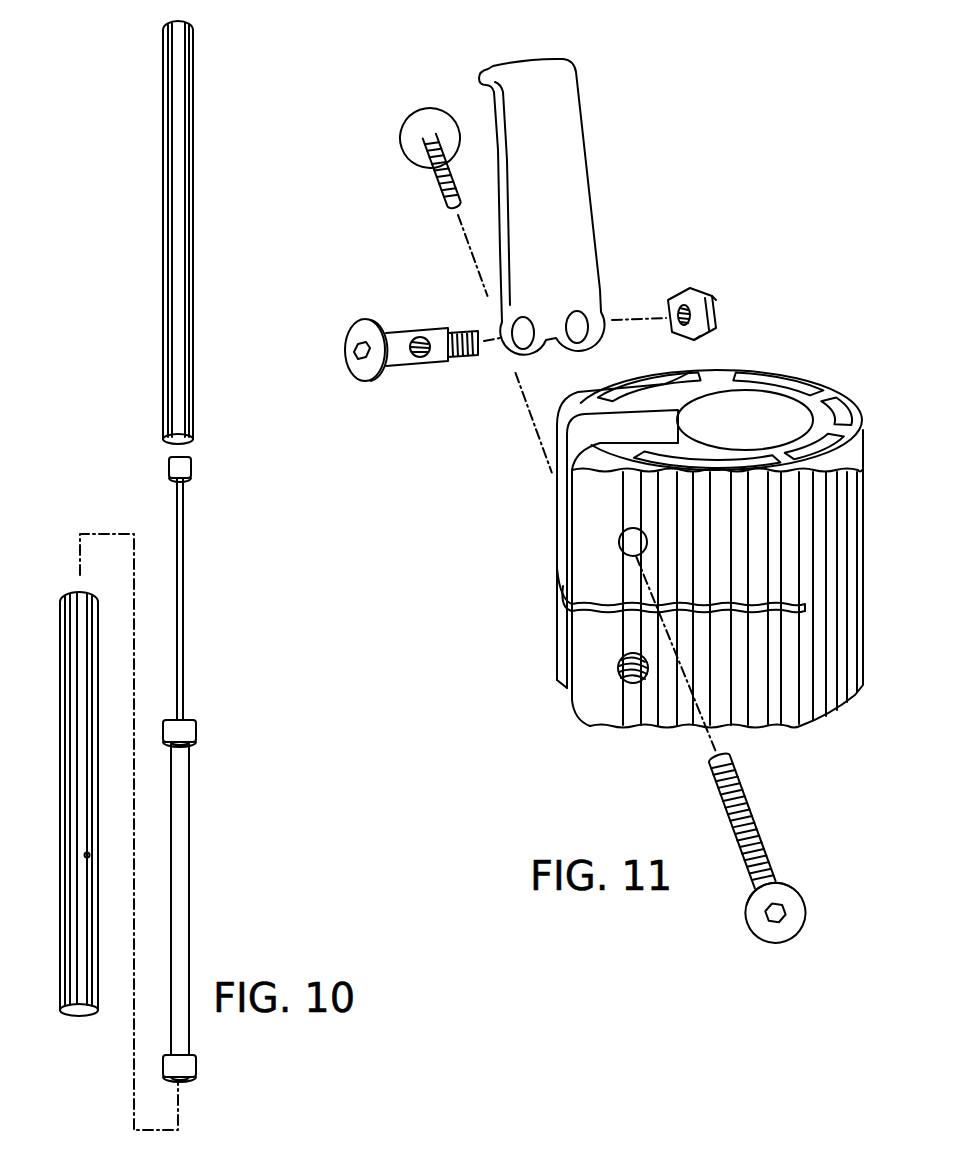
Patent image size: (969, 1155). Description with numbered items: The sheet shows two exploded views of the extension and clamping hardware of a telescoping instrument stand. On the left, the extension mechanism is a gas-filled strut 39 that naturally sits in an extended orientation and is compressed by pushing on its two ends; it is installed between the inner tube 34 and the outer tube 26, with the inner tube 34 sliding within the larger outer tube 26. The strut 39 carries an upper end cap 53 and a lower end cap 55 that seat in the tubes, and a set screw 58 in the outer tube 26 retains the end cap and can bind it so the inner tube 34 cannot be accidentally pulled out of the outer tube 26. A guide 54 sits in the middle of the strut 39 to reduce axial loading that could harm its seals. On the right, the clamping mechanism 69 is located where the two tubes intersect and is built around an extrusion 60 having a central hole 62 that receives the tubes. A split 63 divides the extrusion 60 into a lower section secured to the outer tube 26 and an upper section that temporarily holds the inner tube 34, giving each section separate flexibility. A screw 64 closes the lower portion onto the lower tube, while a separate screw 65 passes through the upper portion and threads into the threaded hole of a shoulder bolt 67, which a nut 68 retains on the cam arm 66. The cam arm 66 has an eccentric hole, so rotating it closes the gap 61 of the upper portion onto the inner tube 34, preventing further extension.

In FIG. 10, the outer tube 26 is at (65, 593).
In FIG. 10, the inner tube 34 is at (194, 330).
In FIG. 10, the strut 39 is at (190, 831).
In FIG. 10, the end cap 53 is at (191, 465).
In FIG. 10, the guide 54 is at (197, 727).
In FIG. 10, the end cap 55 is at (197, 1063).
In FIG. 10, the set screw 58 is at (85, 853).
In FIG. 11, the extrusion 60 is at (737, 372).
In FIG. 11, the gap 61 is at (548, 487).
In FIG. 11, the central hole 62 is at (792, 396).
In FIG. 11, the split 63 is at (560, 576).
In FIG. 11, the screw 64 is at (412, 114).
In FIG. 11, the screw 65 is at (754, 822).
In FIG. 11, the cam arm 66 is at (583, 118).
In FIG. 11, the shoulder bolt 67 is at (368, 373).
In FIG. 11, the nut 68 is at (712, 298).
In FIG. 11, the clamping mechanism 69 is at (730, 218).